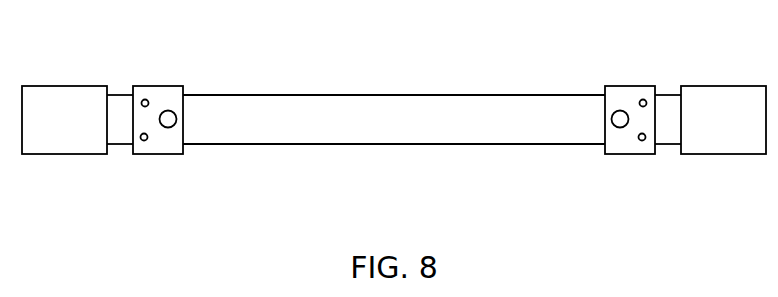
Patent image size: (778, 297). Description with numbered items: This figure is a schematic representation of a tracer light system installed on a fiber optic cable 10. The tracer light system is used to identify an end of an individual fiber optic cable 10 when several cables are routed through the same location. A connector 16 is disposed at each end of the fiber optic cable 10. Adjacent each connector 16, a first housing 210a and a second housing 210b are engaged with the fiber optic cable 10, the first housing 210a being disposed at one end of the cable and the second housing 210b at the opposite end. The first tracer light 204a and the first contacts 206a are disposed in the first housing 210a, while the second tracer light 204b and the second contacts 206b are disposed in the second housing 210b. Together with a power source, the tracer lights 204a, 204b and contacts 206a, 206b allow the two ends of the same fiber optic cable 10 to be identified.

The fiber optic cable 10 is at (418, 68).
The connector 16 is at (63, 85).
The first tracer light 204a is at (175, 113).
The second tracer light 204b is at (612, 113).
The first contacts 206a is at (145, 134).
The second contacts 206b is at (641, 134).
The first housing 210a is at (159, 155).
The second housing 210b is at (633, 155).